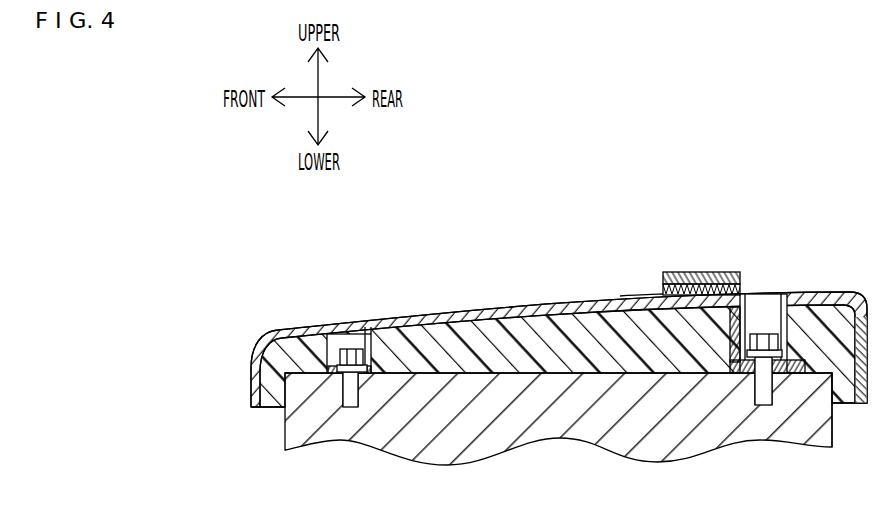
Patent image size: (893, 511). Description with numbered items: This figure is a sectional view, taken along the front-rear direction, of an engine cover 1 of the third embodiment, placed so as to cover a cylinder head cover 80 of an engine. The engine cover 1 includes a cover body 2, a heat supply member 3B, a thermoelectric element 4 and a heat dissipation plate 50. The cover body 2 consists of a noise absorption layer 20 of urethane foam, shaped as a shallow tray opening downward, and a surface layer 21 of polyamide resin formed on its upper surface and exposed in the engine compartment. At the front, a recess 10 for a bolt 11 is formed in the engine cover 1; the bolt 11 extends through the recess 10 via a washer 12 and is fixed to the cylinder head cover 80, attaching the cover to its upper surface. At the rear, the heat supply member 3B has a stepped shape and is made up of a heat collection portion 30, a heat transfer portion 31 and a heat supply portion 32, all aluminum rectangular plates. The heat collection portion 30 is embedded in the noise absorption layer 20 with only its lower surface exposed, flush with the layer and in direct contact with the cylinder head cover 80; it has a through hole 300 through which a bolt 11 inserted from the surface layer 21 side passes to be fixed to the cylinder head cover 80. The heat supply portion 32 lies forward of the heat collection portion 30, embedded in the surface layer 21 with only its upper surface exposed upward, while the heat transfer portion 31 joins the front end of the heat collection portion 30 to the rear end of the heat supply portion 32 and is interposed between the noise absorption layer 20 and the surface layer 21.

The engine cover 1 is at (835, 185).
The cover body 2 is at (559, 309).
The noise absorption layer 20 is at (488, 332).
The surface layer 21 is at (505, 312).
The heat supply member 3B is at (750, 293).
The heat collection portion 30 is at (795, 436).
The through hole 300 is at (759, 370).
The heat transfer portion 31 is at (750, 336).
The heat supply portion 32 is at (652, 294).
The thermoelectric element 4 is at (685, 274).
The heat dissipation plate 50 is at (723, 272).
The recess 10 is at (336, 336).
The bolt 11 is at (352, 350).
The washer 12 is at (322, 374).
The cylinder head cover 80 is at (378, 433).